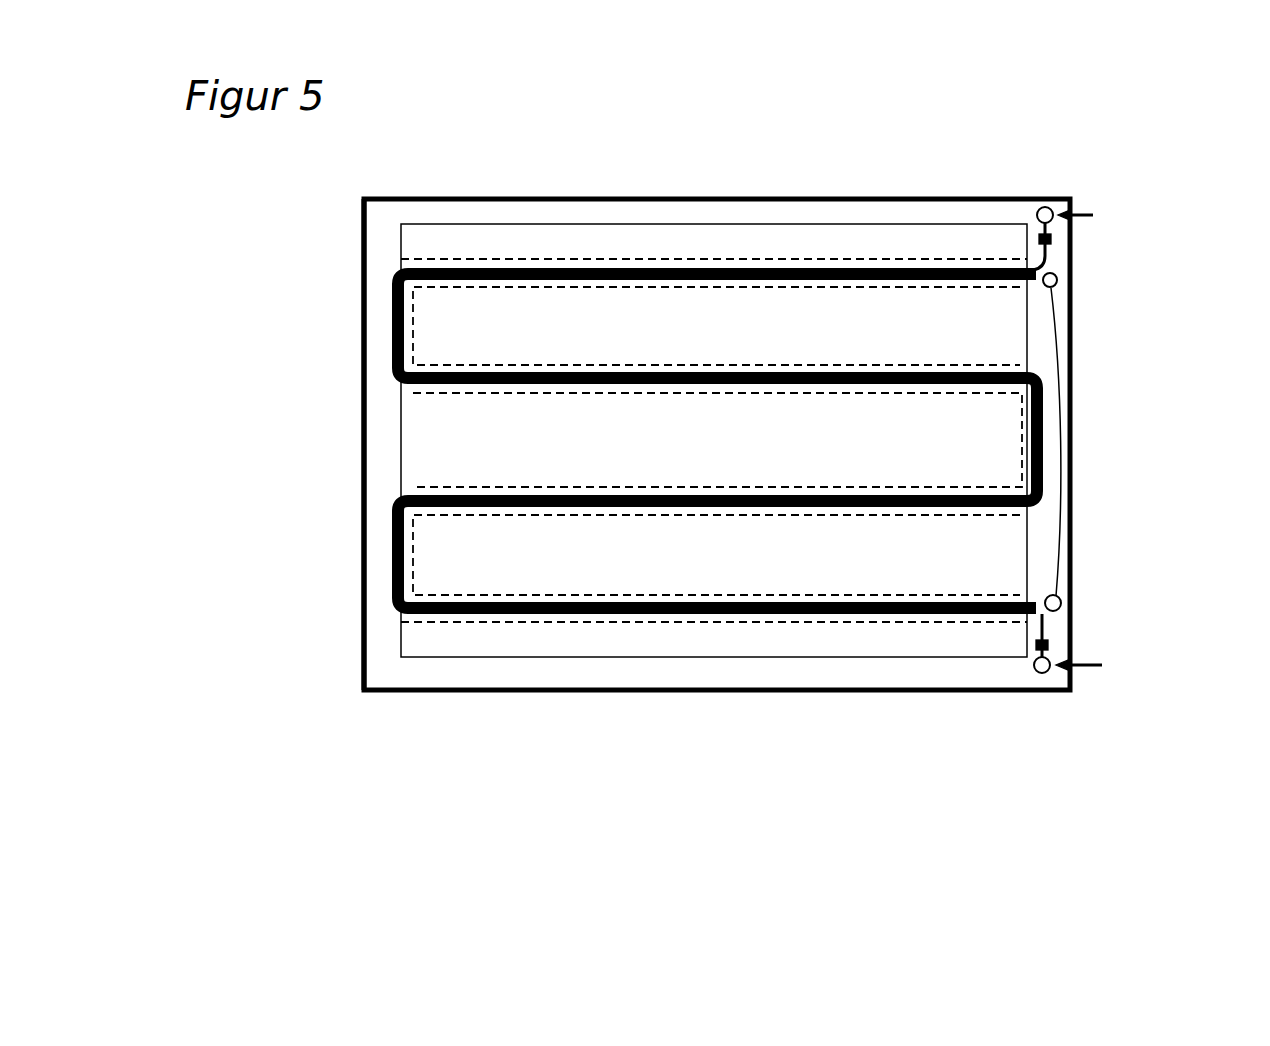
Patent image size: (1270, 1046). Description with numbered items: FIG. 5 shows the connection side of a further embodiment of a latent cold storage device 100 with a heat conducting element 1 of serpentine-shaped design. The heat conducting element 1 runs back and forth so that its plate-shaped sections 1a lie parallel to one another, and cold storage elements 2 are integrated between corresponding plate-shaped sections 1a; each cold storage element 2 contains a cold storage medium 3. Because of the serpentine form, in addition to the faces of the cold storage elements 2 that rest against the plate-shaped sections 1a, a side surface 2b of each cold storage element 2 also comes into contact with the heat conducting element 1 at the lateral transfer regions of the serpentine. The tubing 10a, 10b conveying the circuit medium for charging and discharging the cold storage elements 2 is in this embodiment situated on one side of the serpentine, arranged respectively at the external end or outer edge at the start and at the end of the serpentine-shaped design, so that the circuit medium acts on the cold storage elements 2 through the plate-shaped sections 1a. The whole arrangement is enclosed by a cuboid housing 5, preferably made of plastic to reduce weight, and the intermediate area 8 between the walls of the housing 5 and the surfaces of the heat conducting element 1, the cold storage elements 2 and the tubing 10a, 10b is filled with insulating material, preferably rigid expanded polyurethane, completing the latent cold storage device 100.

The heat conducting element 1 is at (682, 268).
The plate-shaped section 1a is at (671, 388).
The cold storage element 2 is at (395, 530).
The side surface 2b is at (400, 455).
The cold storage medium 3 is at (851, 383).
The housing 5 is at (362, 638).
The intermediate area 8 is at (470, 677).
The tubing conveying the circuit medium for charging 10a is at (1058, 210).
The tubing conveying the circuit medium for discharging 10b is at (1054, 285).
The latent cold storage device 100 is at (282, 460).